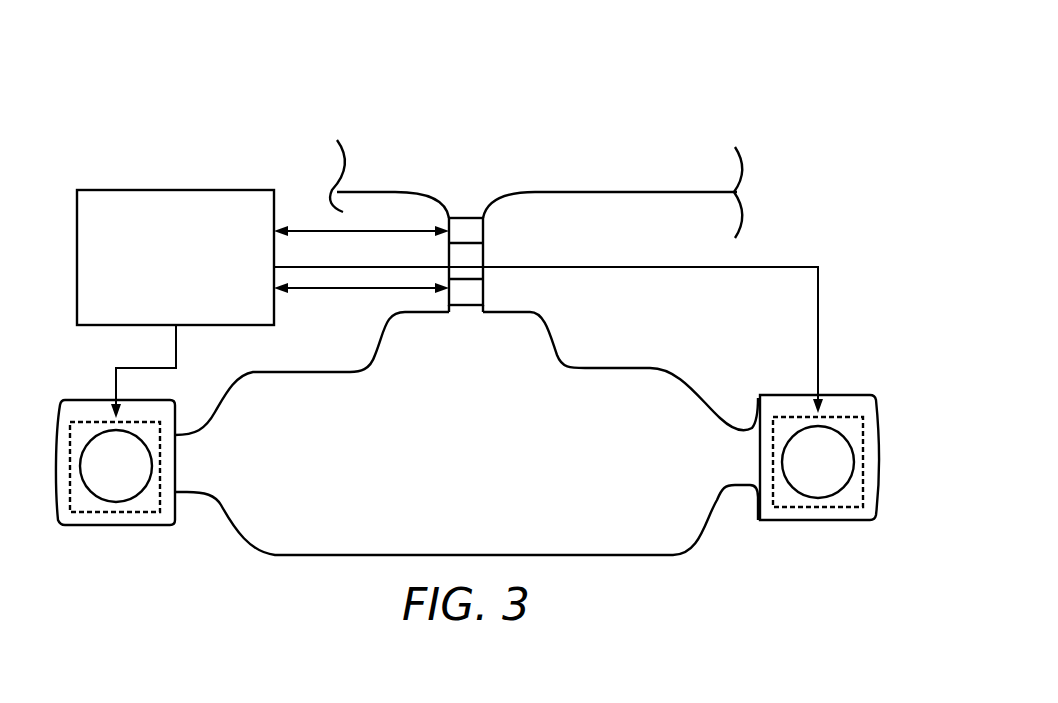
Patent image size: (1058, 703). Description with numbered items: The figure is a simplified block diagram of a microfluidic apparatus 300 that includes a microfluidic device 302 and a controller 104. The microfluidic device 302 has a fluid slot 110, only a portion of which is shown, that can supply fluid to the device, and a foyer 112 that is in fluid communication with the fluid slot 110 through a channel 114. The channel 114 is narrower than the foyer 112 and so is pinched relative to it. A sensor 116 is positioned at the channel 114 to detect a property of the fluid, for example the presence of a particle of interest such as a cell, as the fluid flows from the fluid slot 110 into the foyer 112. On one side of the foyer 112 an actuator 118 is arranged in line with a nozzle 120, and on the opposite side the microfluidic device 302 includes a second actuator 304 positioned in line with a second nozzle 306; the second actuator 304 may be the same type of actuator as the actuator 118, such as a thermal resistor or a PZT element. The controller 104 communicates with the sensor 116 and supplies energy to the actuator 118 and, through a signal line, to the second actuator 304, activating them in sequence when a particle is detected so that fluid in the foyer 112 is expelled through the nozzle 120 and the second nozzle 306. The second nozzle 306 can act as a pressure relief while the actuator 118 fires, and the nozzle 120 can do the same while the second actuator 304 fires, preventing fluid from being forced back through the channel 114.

The microfluidic apparatus 300 is at (372, 57).
The microfluidic device 302 is at (823, 201).
The controller 104 is at (195, 282).
The fluid slot 110 is at (583, 146).
The foyer 112 is at (483, 468).
The channel 114 is at (484, 250).
The sensor 116 is at (445, 180).
The actuator 118 is at (138, 514).
The nozzle 120 is at (100, 498).
The second actuator 304 is at (783, 403).
The second nozzle 306 is at (797, 497).